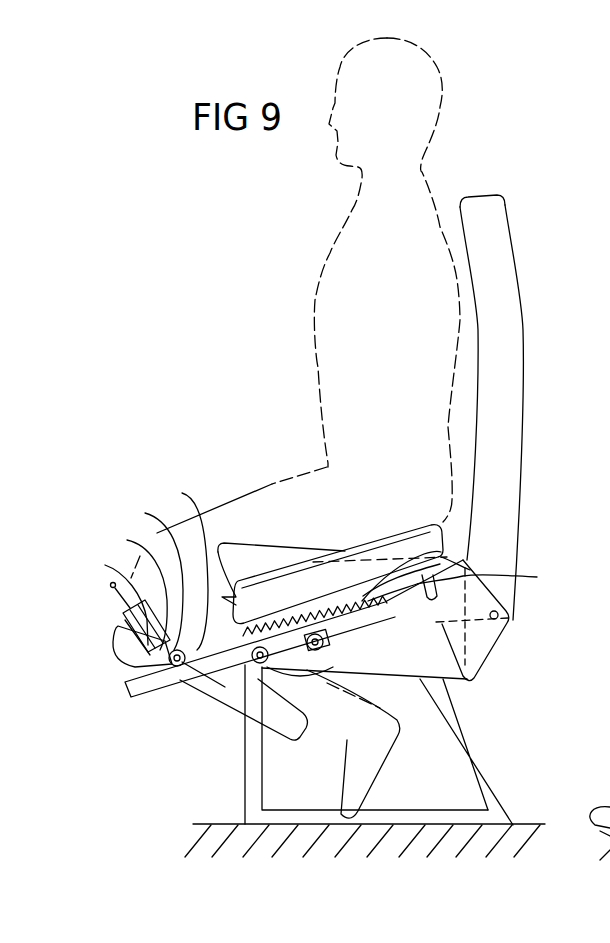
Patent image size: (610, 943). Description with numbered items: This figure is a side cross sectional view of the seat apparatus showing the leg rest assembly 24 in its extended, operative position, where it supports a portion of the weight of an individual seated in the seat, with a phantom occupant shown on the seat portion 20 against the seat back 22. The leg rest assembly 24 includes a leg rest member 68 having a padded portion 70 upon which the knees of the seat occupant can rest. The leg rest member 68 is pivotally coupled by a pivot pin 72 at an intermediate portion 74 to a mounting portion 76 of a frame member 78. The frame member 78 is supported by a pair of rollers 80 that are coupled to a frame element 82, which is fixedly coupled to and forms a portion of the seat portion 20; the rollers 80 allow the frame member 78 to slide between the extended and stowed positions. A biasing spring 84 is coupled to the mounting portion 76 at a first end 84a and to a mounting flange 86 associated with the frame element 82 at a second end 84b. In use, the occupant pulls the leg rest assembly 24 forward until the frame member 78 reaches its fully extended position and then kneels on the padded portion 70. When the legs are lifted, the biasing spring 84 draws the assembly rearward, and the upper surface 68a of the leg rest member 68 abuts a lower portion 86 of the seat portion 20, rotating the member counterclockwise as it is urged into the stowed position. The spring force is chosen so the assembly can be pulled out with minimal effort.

The seat portion 20 is at (293, 543).
The seat back 22 is at (513, 224).
The leg rest assembly 24 is at (144, 709).
The leg rest member 68 is at (120, 655).
The upper surface 68a is at (123, 586).
The padded portion 70 is at (123, 626).
The pivot pin 72 is at (112, 597).
The intermediate portion 74 is at (203, 690).
The mounting portion 76 is at (157, 533).
The frame member 78 is at (236, 722).
The rollers 80 is at (327, 641).
The frame element 82 is at (498, 616).
The biasing spring 84 is at (453, 558).
The first end 84a is at (140, 571).
The second end 84b is at (460, 555).
The mounting flange 86 is at (361, 563).